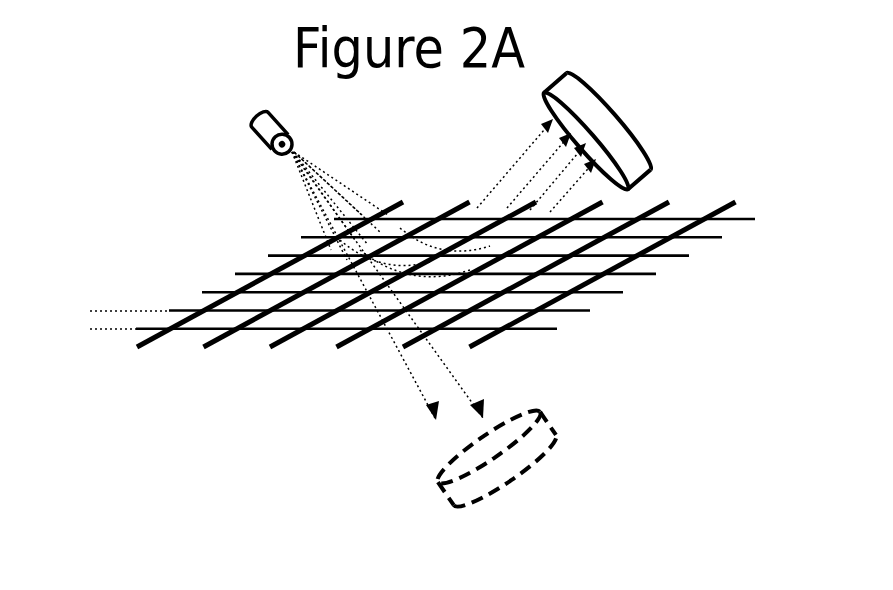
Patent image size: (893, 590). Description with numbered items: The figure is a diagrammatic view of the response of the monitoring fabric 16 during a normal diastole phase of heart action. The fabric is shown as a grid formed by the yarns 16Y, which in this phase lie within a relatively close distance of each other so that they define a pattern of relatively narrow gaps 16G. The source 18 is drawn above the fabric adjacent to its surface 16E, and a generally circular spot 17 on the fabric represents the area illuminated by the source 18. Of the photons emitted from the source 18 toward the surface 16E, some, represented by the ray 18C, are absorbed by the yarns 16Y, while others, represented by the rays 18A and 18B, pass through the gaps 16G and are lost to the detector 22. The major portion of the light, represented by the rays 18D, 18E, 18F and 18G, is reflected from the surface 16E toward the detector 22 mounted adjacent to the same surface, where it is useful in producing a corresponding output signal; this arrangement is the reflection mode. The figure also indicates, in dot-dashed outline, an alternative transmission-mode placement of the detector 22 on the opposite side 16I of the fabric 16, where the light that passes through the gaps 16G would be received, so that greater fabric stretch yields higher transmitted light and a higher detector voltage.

The monitoring fabric 16 is at (578, 324).
The surface of the monitoring fabric 16E is at (293, 281).
The gaps 16G is at (137, 311).
The opposite side of the fabric 16I is at (187, 348).
The yarns 16Y is at (745, 196).
The illuminated spot 17 is at (480, 283).
The source 18 is at (252, 135).
The ray 18A is at (437, 348).
The ray 18B is at (388, 285).
The ray 18C is at (356, 192).
The ray 18D is at (550, 200).
The ray 18E is at (539, 170).
The ray 18F is at (558, 176).
The ray 18G is at (573, 185).
The detector 22 is at (613, 120).